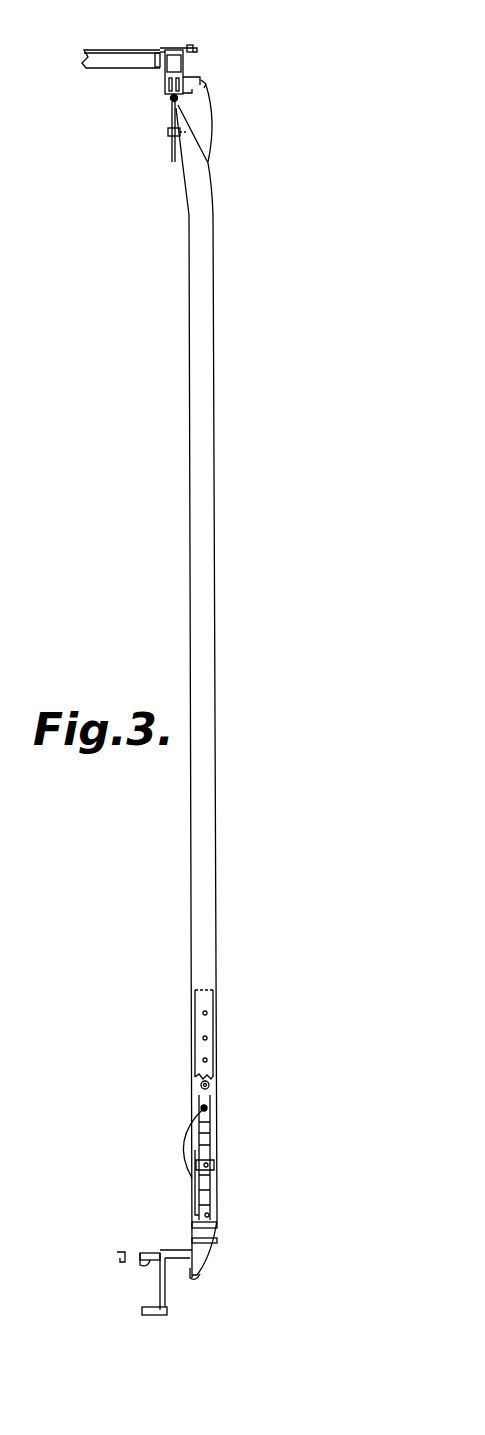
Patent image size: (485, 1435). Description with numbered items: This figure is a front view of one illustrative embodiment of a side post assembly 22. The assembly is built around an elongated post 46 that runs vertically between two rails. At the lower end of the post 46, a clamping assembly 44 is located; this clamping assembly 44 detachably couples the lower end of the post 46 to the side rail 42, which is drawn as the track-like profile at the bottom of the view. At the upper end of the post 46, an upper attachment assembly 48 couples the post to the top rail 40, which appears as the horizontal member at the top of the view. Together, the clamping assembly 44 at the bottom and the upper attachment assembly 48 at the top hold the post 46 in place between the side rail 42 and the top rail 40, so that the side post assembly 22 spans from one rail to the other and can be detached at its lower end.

The top rail 40 is at (178, 49).
The upper attachment assembly 48 is at (138, 95).
The side post assembly 22 is at (244, 548).
The post 46 is at (192, 890).
The clamping assembly 44 is at (165, 1190).
The side rail 42 is at (130, 1252).